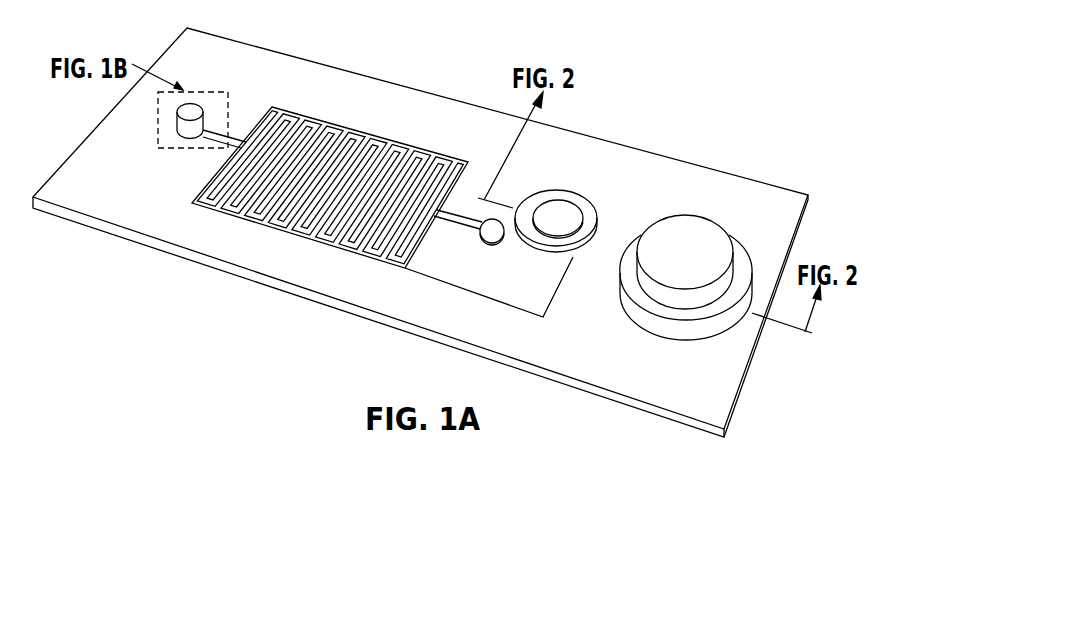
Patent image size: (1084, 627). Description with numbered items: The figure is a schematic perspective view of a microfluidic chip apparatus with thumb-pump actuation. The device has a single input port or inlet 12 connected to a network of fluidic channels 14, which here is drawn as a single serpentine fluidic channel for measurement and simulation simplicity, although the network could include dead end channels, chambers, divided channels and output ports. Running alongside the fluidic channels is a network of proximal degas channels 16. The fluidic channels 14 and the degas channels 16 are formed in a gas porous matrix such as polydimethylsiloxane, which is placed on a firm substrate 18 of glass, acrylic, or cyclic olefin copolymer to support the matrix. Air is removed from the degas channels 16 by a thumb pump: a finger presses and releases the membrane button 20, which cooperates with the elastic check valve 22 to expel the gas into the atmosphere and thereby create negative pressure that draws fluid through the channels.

The inlet 12 is at (183, 140).
The fluidic channels 14 is at (288, 133).
The proximal degas channels 16 is at (378, 158).
The substrate 18 is at (735, 403).
The membrane button 20 is at (672, 340).
The elastic check valve 22 is at (563, 213).